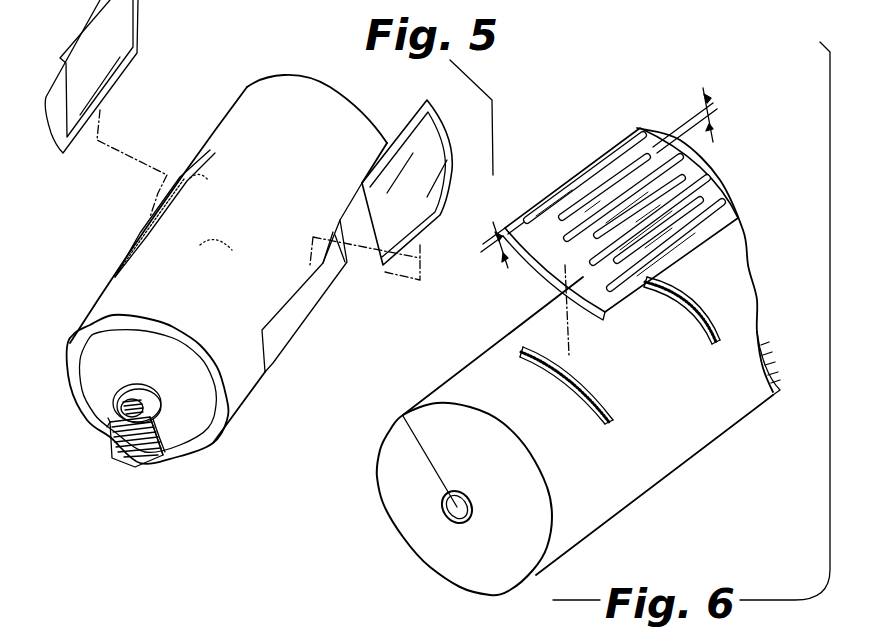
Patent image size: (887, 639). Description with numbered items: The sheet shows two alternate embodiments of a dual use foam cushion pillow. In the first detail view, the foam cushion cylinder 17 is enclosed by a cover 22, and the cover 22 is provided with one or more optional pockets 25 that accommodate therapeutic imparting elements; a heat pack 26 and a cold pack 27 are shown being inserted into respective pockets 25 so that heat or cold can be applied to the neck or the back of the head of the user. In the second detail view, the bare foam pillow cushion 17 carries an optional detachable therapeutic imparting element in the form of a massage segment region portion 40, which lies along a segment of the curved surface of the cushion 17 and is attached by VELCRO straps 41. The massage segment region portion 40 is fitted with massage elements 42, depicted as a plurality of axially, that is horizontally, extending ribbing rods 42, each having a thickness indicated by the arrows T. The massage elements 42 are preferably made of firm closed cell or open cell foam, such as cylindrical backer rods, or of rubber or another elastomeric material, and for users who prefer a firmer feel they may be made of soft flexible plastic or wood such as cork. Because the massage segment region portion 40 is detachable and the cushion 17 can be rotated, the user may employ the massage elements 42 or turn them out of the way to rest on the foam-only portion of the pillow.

In FIG. 6, the foam cushion cylinder 17 is at (695, 463).
In FIG. 5, the cover 22 is at (270, 93).
In FIG. 5, the pocket 25 is at (130, 237).
In FIG. 5, the heat pack 26 is at (120, 57).
In FIG. 5, the cold pack 27 is at (433, 157).
In FIG. 6, the massage segment region portion 40 is at (620, 189).
In FIG. 6, the VELCRO straps 41 is at (608, 390).
In FIG. 6, the massage elements 42 is at (577, 183).
In FIG. 6, the thickness T is at (608, 176).